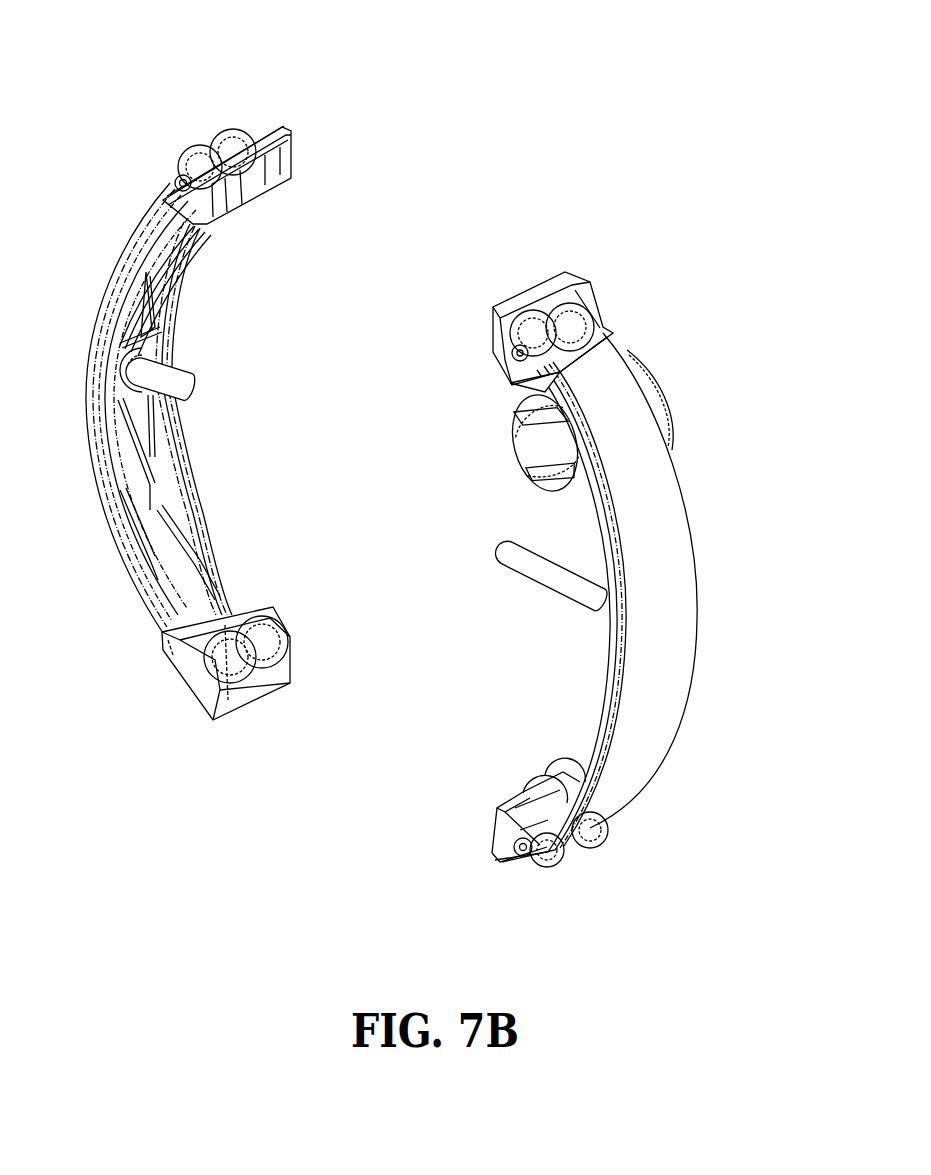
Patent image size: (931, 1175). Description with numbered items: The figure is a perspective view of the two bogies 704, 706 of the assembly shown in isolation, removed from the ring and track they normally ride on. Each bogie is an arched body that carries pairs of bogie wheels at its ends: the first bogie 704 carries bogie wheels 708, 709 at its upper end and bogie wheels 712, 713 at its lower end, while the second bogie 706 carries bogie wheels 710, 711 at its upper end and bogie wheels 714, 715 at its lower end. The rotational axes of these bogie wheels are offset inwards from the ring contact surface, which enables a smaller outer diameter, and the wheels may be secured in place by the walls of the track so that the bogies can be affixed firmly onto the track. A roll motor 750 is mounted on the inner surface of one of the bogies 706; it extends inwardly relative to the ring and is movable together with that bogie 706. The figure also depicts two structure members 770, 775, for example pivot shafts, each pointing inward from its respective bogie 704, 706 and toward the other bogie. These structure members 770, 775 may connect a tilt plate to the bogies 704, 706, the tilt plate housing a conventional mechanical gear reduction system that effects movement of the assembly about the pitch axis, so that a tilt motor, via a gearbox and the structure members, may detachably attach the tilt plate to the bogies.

The bogie 704 is at (191, 399).
The bogie 706 is at (621, 564).
The bogie wheel 708 is at (187, 147).
The bogie wheel 709 is at (235, 125).
The bogie wheel 710 is at (530, 305).
The bogie wheel 711 is at (565, 305).
The bogie wheel 712 is at (234, 674).
The bogie wheel 713 is at (262, 650).
The bogie wheel 714 is at (560, 856).
The bogie wheel 715 is at (594, 835).
The roll motor 750 is at (661, 384).
The structure member 770 is at (502, 549).
The structure member 775 is at (194, 383).